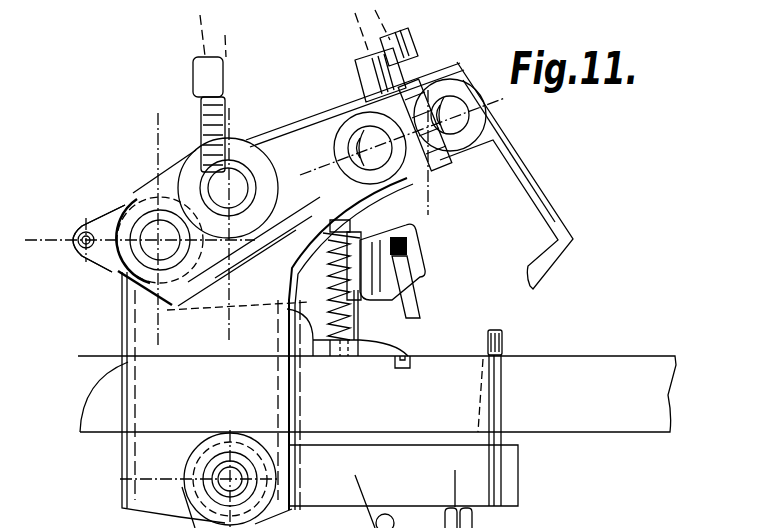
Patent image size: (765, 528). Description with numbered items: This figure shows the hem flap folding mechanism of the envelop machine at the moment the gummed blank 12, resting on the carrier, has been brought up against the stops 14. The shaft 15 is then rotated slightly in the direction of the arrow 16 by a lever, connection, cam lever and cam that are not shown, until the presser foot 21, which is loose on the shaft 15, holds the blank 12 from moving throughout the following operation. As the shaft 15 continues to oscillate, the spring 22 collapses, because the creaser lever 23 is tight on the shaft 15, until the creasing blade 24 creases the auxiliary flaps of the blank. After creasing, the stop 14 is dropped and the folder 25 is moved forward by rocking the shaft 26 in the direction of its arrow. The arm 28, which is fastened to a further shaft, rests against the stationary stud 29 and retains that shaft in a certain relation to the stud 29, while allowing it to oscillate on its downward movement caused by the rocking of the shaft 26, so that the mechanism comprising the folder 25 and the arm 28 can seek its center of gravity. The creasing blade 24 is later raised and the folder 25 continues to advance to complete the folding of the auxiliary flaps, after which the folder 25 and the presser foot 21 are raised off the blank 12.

The blank 12 is at (75, 356).
The stops 14 is at (503, 333).
The shaft 15 is at (118, 272).
The arrow 16 is at (140, 205).
The presser foot 21 is at (385, 344).
The spring 22 is at (362, 228).
The creaser lever 23 is at (424, 246).
The creasing blade 24 is at (412, 299).
The folder 25 is at (556, 209).
The shaft 26 is at (345, 97).
The arm 28 is at (405, 165).
The stationary stud 29 is at (333, 165).